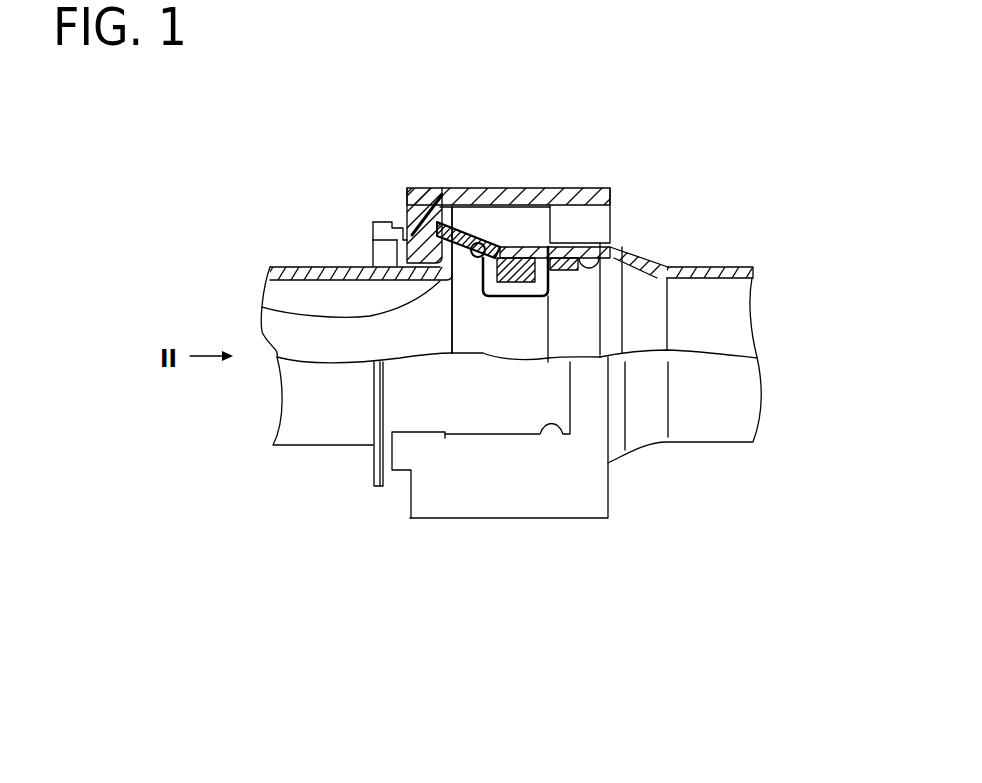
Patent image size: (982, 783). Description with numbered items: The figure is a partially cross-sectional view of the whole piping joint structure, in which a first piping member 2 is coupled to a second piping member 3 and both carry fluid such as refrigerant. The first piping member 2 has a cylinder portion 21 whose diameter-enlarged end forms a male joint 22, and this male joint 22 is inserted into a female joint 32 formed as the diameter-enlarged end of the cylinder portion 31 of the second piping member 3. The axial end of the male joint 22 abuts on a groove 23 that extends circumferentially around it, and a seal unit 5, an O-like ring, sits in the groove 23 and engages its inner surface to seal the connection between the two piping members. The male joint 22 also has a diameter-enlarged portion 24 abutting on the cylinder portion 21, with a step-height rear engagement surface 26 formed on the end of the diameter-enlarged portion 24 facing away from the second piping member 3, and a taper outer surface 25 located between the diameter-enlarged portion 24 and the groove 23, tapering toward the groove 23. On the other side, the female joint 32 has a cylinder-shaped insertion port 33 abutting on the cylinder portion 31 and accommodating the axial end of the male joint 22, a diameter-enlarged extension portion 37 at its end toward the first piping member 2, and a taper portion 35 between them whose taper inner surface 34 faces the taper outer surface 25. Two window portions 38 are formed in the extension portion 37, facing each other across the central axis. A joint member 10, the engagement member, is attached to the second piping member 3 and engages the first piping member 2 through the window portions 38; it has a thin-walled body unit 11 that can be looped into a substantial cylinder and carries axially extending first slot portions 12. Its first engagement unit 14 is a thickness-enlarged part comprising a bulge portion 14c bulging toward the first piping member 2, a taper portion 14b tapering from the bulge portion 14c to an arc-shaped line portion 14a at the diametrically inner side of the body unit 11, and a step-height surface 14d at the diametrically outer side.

The first piping member 2 is at (249, 241).
The cylinder portion 21 is at (289, 266).
The extension portion 37 is at (371, 220).
The step-height surface 14d is at (381, 222).
The bulge portion 14c is at (373, 240).
The taper portion 14b is at (373, 262).
The line portion 14a is at (300, 310).
The first engagement unit 14 is at (418, 198).
The rear engagement surface 26 is at (407, 212).
The window portion 38 is at (438, 200).
The diameter-enlarged portion 24 is at (470, 243).
The taper portion 35 is at (495, 256).
The taper inner surface 34 is at (508, 248).
The body unit 11 is at (540, 188).
The joint member 10 is at (577, 178).
The female joint 32 is at (572, 230).
The insertion port 33 is at (623, 250).
The second piping member 3 is at (722, 241).
The cylinder portion 31 is at (750, 268).
The taper outer surface 25 is at (443, 290).
The groove 23 is at (467, 258).
The seal unit 5 is at (505, 260).
The first slot portion 12 is at (571, 293).
The male joint 22 is at (614, 463).